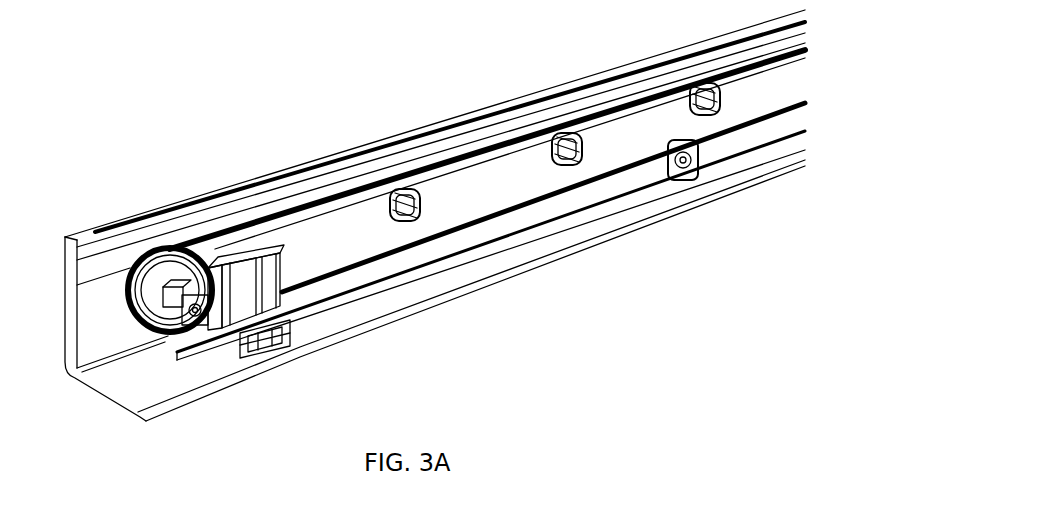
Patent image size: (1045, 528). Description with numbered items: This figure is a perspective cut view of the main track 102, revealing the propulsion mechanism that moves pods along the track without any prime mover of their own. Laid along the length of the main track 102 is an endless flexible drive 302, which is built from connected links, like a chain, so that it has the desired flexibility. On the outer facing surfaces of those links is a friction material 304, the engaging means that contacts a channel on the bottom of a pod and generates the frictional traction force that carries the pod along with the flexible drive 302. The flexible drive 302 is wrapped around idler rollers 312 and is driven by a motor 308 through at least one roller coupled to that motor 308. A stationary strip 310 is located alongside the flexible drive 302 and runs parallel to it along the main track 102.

The main track 102 is at (145, 56).
The flexible drive 302 is at (348, 184).
The friction material 304 is at (200, 243).
The motor 308 is at (245, 300).
The stationary strip 310 is at (113, 223).
The idler rollers 312 is at (410, 220).